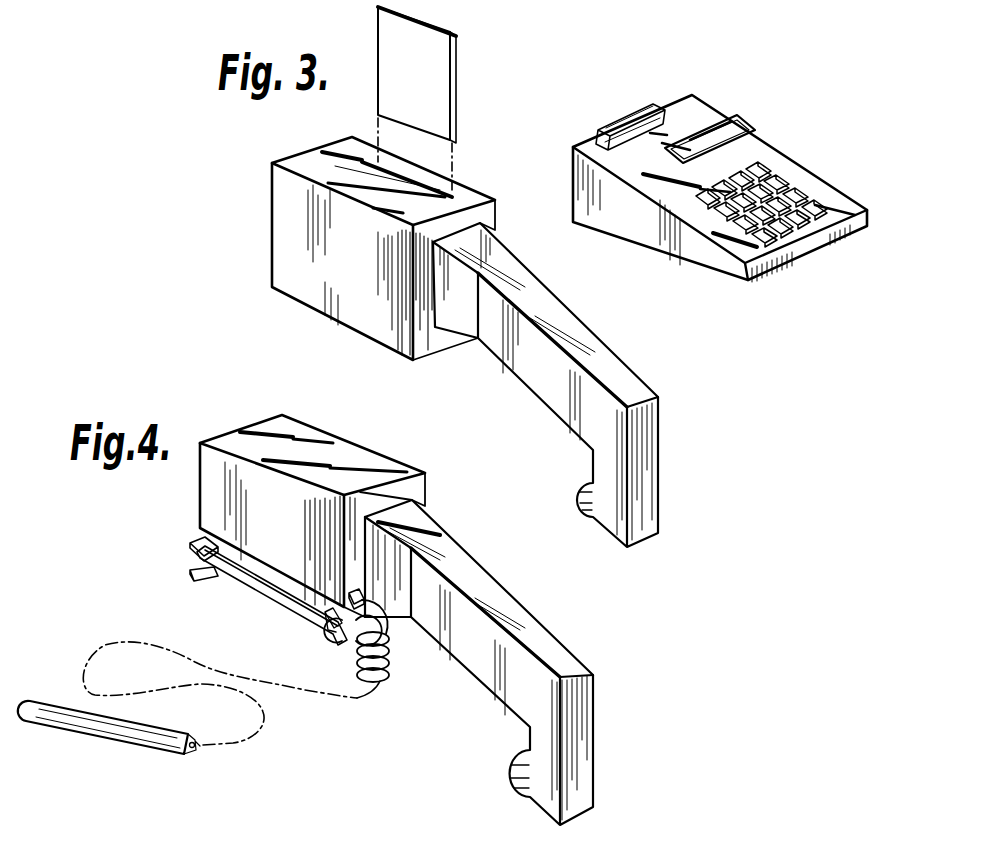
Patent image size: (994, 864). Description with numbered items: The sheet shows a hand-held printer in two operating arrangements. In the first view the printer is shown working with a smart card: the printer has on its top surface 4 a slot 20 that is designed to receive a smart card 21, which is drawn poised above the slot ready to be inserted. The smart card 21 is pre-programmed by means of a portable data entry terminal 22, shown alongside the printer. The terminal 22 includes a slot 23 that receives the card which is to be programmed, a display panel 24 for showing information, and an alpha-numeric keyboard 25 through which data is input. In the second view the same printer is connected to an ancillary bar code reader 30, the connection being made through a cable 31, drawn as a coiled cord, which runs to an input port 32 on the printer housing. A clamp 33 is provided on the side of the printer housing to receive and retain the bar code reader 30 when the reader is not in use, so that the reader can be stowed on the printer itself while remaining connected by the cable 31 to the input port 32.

In FIG. 3, the top surface 4 is at (308, 163).
In FIG. 3, the slot 20 is at (432, 178).
In FIG. 3, the smart card 21 is at (434, 70).
In FIG. 3, the portable data entry terminal 22 is at (590, 183).
In FIG. 3, the slot 23 is at (625, 115).
In FIG. 3, the display panel 24 is at (740, 123).
In FIG. 3, the alpha-numeric keyboard 25 is at (787, 188).
In FIG. 4, the bar code reader 30 is at (66, 712).
In FIG. 4, the cable 31 is at (357, 698).
In FIG. 4, the input port 32 is at (302, 603).
In FIG. 4, the clamp 33 is at (197, 540).